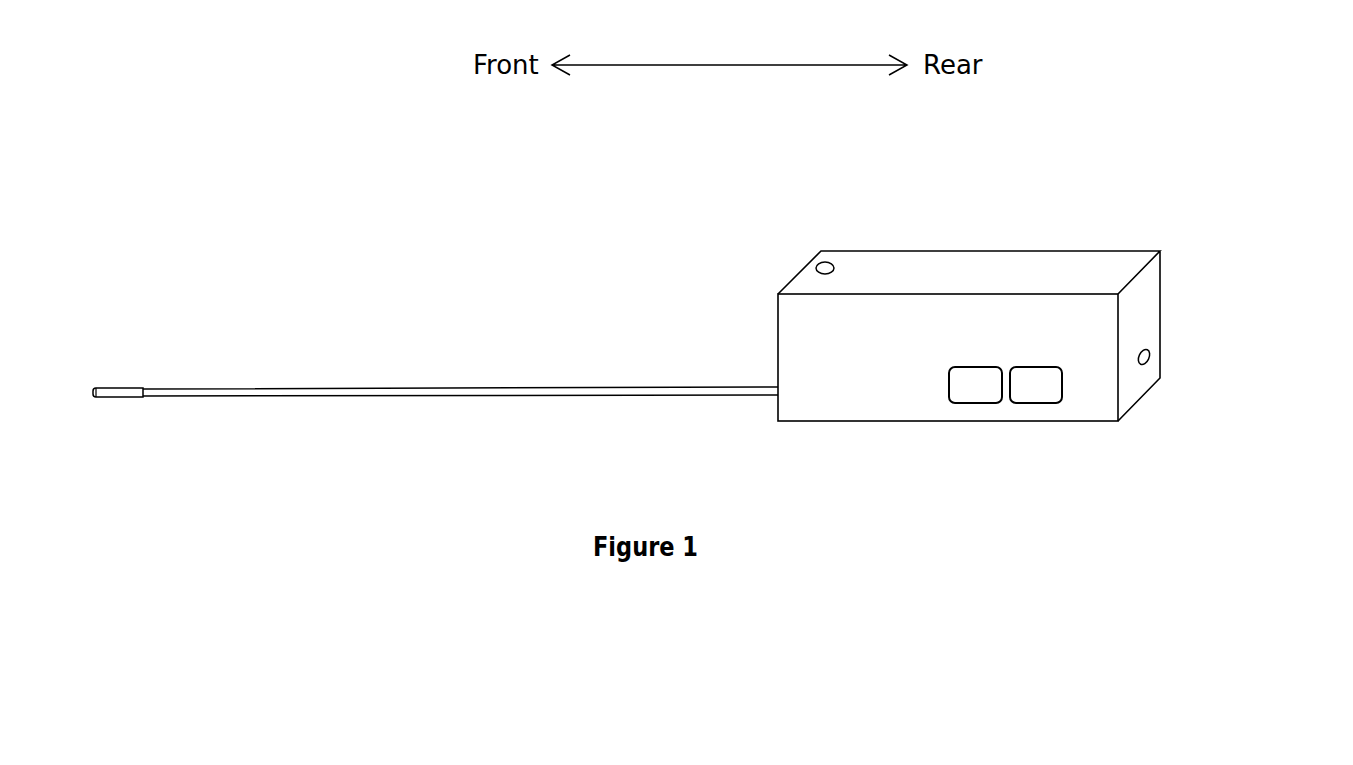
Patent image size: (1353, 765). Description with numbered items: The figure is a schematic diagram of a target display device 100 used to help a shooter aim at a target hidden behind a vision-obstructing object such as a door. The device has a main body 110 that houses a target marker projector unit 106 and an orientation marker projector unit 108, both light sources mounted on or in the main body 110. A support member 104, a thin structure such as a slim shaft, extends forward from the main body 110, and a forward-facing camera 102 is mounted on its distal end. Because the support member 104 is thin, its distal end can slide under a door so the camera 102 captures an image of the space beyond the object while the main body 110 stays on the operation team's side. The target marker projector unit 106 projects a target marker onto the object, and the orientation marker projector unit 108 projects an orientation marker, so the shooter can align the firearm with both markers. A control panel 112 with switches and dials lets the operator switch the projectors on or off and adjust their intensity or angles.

The target display device 100 is at (438, 197).
The forward-facing camera 102 is at (130, 380).
The support member 104 is at (463, 379).
The target marker projector unit 106 is at (840, 262).
The orientation marker projector unit 108 is at (1177, 342).
The main body 110 is at (1002, 250).
The control panel 112 is at (978, 412).